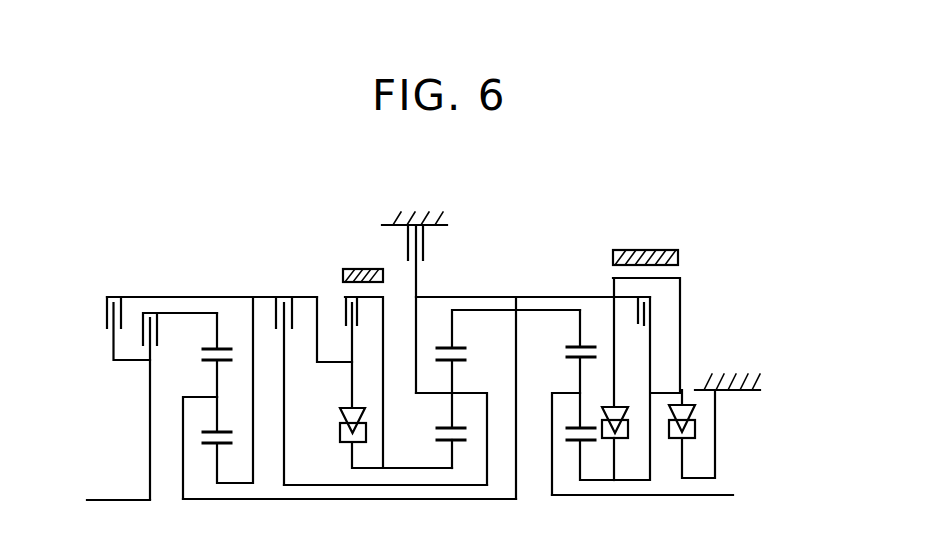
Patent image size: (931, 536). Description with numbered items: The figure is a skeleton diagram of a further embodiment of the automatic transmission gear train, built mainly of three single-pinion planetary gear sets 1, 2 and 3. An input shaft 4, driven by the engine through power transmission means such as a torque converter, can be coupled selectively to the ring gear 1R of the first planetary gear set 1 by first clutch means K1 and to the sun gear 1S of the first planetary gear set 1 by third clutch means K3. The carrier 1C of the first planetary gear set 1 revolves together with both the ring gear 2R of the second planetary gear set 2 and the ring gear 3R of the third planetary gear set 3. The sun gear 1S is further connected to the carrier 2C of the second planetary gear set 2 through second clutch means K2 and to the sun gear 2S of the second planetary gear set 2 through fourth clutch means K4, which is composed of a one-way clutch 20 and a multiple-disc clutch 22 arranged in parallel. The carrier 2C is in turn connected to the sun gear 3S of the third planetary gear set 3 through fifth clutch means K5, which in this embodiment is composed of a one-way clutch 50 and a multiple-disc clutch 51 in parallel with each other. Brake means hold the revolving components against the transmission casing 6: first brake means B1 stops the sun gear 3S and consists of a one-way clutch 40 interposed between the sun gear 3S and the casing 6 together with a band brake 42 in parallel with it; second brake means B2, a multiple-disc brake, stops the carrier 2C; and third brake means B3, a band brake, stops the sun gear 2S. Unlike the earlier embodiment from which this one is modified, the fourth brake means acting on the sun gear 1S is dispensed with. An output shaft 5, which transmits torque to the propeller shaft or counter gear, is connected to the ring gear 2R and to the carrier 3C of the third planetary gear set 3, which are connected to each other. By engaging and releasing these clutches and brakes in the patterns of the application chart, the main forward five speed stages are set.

The third clutch means K3 is at (126, 314).
The first clutch means K1 is at (180, 406).
The second clutch means K2 is at (312, 377).
The fourth clutch means K4 is at (361, 397).
The fifth clutch means K5 is at (624, 392).
The first brake means B1 is at (701, 317).
The second brake means B2 is at (414, 286).
The third brake means B3 is at (397, 354).
The first planetary gear set 1 is at (207, 482).
The ring gear of the first planetary gear set 1R is at (227, 355).
The carrier of the first planetary gear set 1C is at (200, 434).
The sun gear of the first planetary gear set 1S is at (228, 390).
The second planetary gear set 2 is at (438, 477).
The ring gear of the second planetary gear set 2R is at (508, 369).
The carrier of the second planetary gear set 2C is at (453, 425).
The sun gear of the second planetary gear set 2S is at (461, 452).
The third planetary gear set 3 is at (567, 482).
The ring gear of the third planetary gear set 3R is at (570, 369).
The carrier of the third planetary gear set 3C is at (568, 429).
The sun gear of the third planetary gear set 3S is at (608, 454).
The input shaft 4 is at (117, 500).
The output shaft 5 is at (733, 493).
The transmission casing 6 is at (437, 218).
The one-way clutch 20 is at (344, 427).
The multiple-disc clutch 22 is at (342, 310).
The one-way clutch 40 is at (686, 403).
The band brake 42 is at (680, 252).
The one-way clutch 50 is at (628, 433).
The multiple-disc clutch 51 is at (636, 312).